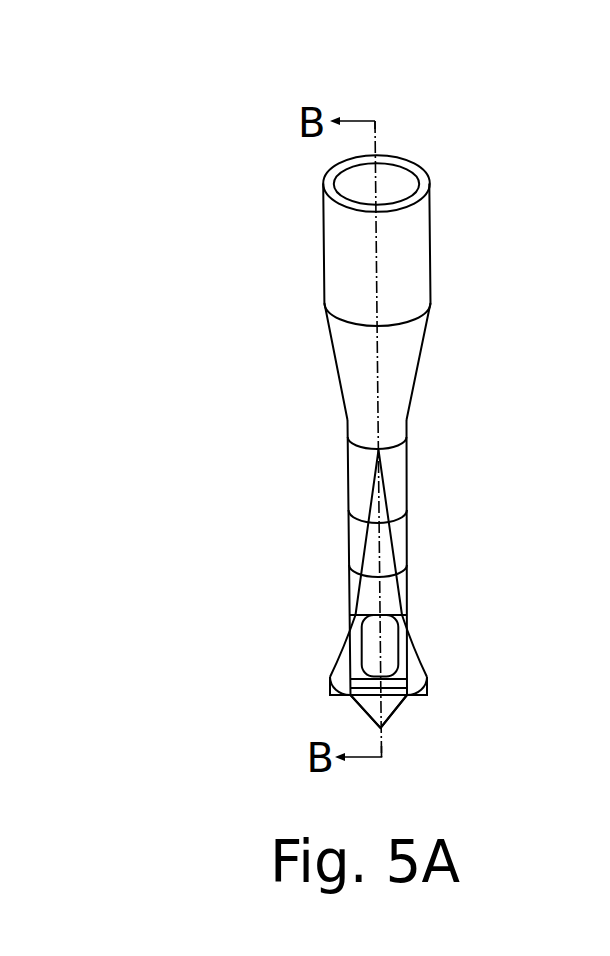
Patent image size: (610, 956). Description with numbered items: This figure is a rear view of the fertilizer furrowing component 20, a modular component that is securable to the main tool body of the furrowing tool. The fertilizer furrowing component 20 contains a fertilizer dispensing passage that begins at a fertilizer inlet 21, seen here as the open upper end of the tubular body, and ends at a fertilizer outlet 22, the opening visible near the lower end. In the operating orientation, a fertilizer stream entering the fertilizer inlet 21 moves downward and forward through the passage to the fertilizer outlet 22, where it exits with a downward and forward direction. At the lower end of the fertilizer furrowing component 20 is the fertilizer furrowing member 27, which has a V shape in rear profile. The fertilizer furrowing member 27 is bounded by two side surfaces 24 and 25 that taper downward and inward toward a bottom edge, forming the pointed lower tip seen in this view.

The fertilizer furrowing component 20 is at (273, 250).
The fertilizer inlet 21 is at (390, 178).
The fertilizer outlet 22 is at (387, 633).
The side surface 24 is at (393, 723).
The side surface 25 is at (358, 708).
The fertilizer furrowing member 27 is at (390, 705).